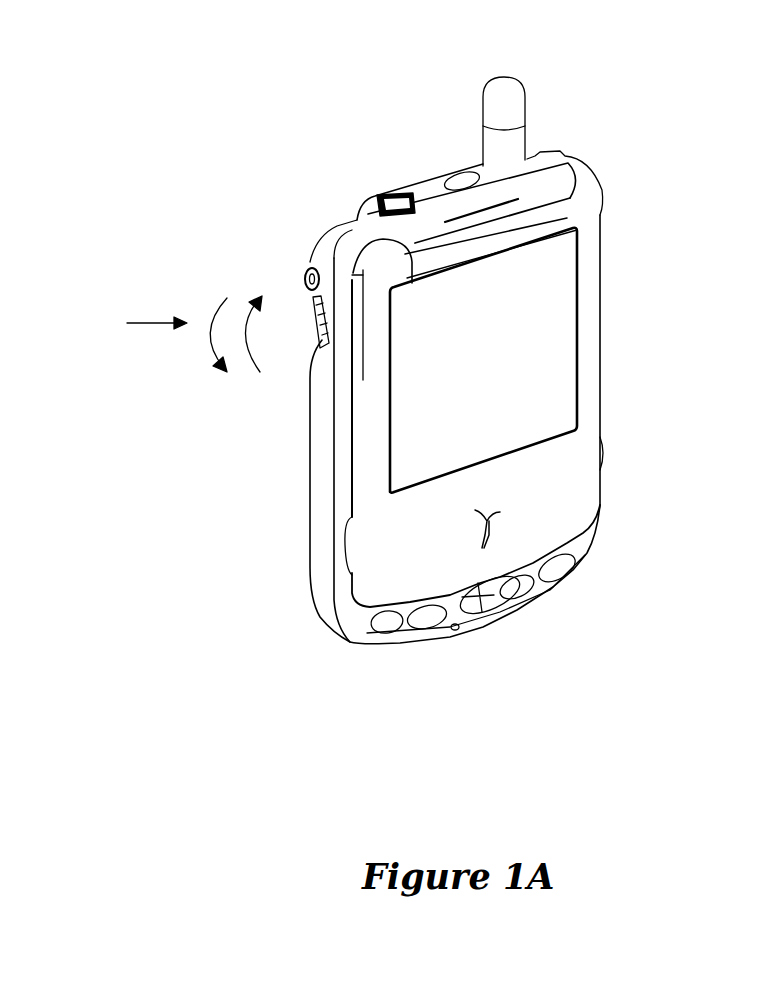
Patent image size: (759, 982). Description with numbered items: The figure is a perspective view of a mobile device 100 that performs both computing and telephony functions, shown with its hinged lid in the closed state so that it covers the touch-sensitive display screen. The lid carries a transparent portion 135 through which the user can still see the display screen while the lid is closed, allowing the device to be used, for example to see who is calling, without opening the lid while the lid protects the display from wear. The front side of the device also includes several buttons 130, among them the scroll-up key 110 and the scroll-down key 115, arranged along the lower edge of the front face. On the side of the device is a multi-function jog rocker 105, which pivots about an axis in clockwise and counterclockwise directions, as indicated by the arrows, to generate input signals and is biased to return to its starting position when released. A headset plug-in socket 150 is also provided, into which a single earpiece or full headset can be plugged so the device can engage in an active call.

The mobile device 100 is at (630, 120).
The multi-function jog rocker 105 is at (307, 322).
The scroll-up key 110 is at (487, 590).
The scroll-down key 115 is at (463, 623).
The buttons 130 is at (580, 600).
The transparent portion 135 is at (547, 379).
The headset plug-in socket 150 is at (304, 268).